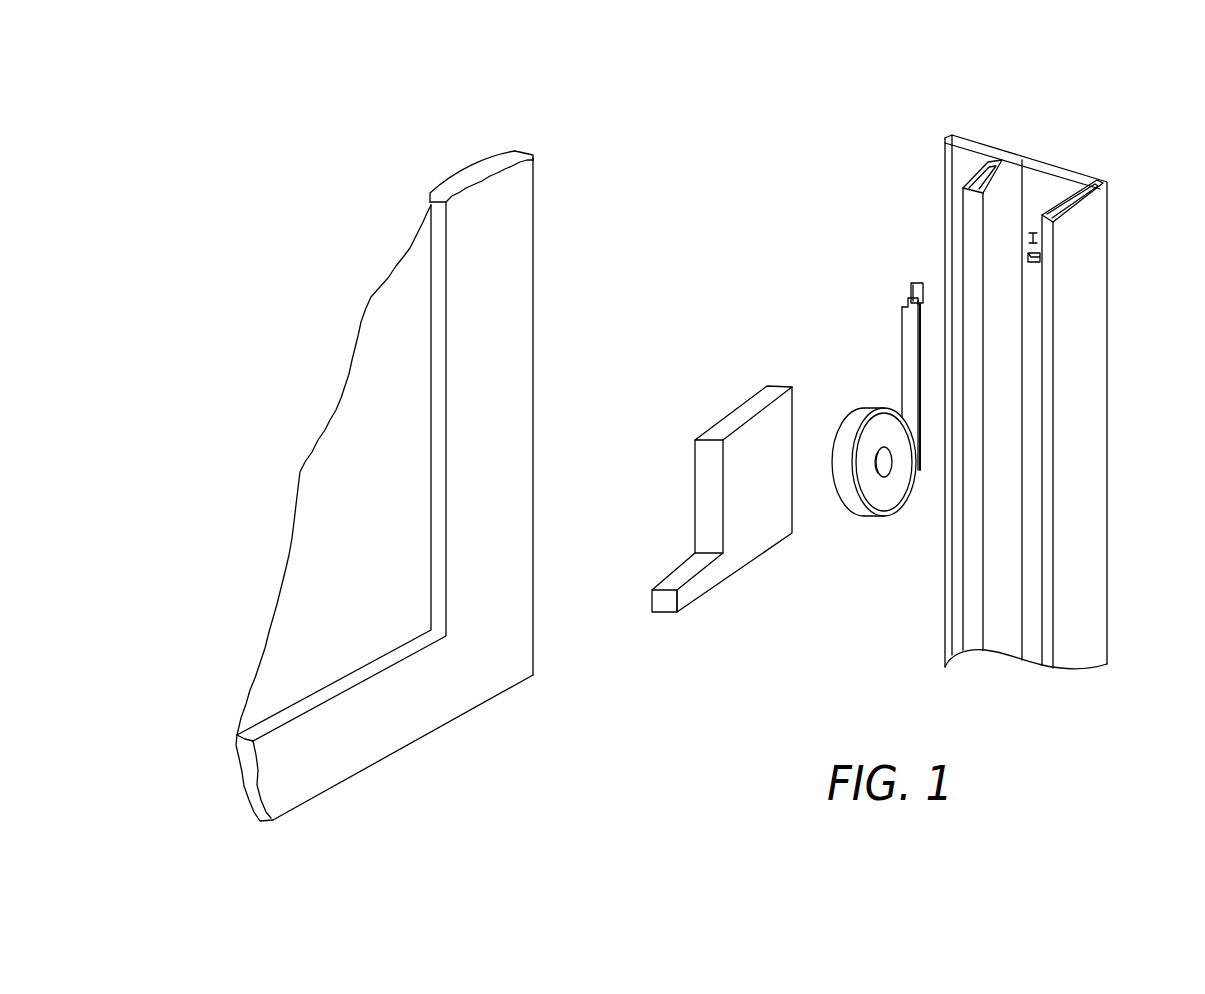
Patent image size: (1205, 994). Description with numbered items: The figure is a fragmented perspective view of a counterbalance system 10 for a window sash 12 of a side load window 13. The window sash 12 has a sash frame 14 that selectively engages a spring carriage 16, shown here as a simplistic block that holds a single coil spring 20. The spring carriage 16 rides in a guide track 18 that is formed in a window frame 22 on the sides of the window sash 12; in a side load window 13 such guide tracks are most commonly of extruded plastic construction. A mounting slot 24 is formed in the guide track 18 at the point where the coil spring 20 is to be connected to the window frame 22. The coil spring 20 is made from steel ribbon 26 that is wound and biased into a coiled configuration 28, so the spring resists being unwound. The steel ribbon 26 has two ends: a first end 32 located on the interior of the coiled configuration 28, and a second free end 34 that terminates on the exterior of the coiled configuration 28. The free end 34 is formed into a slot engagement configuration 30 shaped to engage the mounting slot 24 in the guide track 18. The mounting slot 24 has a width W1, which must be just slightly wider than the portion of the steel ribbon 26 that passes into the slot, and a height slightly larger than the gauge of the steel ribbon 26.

The counterbalance system 10 is at (1022, 67).
The window sash 12 is at (510, 492).
The side load window 13 is at (535, 280).
The sash frame 14 is at (482, 668).
The spring carriage 16 is at (760, 550).
The guide track 18 is at (1050, 188).
The coil spring 20 is at (862, 410).
The window frame 22 is at (1107, 382).
The mounting slot 24 is at (1035, 257).
The steel ribbon 26 is at (907, 353).
The coiled configuration 28 is at (873, 522).
The slot engagement configuration 30 is at (897, 307).
The first end 32 is at (883, 475).
The second free end 34 is at (917, 281).
The width W1 is at (1033, 235).